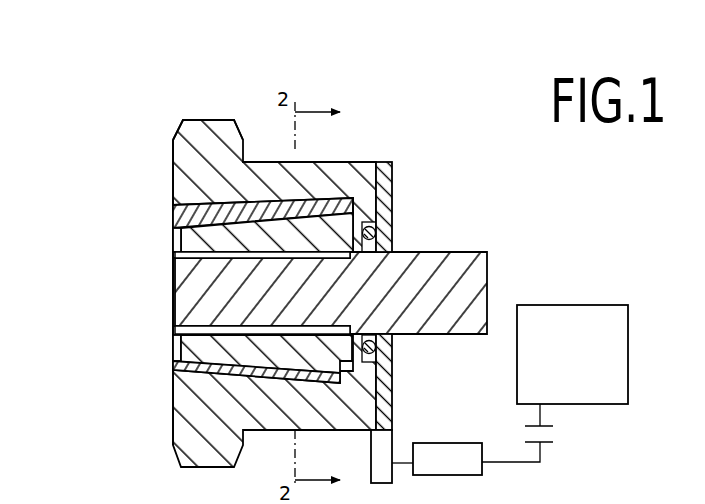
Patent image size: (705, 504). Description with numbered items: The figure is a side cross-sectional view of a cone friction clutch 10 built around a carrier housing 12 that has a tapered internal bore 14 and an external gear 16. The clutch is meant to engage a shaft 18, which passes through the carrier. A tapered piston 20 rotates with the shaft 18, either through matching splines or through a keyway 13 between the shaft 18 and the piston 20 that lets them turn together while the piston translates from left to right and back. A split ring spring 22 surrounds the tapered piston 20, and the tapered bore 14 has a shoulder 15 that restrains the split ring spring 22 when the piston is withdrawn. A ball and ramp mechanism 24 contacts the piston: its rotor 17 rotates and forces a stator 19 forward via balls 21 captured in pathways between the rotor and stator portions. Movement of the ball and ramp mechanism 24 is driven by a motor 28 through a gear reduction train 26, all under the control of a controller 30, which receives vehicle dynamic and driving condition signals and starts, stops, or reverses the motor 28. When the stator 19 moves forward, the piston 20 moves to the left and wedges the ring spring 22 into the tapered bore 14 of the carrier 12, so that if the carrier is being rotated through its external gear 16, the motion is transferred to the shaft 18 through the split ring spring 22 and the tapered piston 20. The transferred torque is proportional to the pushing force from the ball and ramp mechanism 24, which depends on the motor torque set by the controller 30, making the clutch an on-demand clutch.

The cone friction clutch 10 is at (403, 281).
The carrier housing 12 is at (334, 168).
The keyway 13 is at (342, 259).
The tapered internal bore 14 is at (179, 238).
The shoulder 15 is at (328, 210).
The external gear 16 is at (233, 120).
The rotor 17 is at (393, 238).
The shaft 18 is at (462, 287).
The stator 19 is at (362, 364).
The tapered piston 20 is at (225, 343).
The balls 21 is at (393, 348).
The split ring spring 22 is at (195, 219).
The ball and ramp mechanism 24 is at (392, 198).
The gear reduction train 26 is at (382, 468).
The motor 28 is at (480, 472).
The controller 30 is at (628, 380).